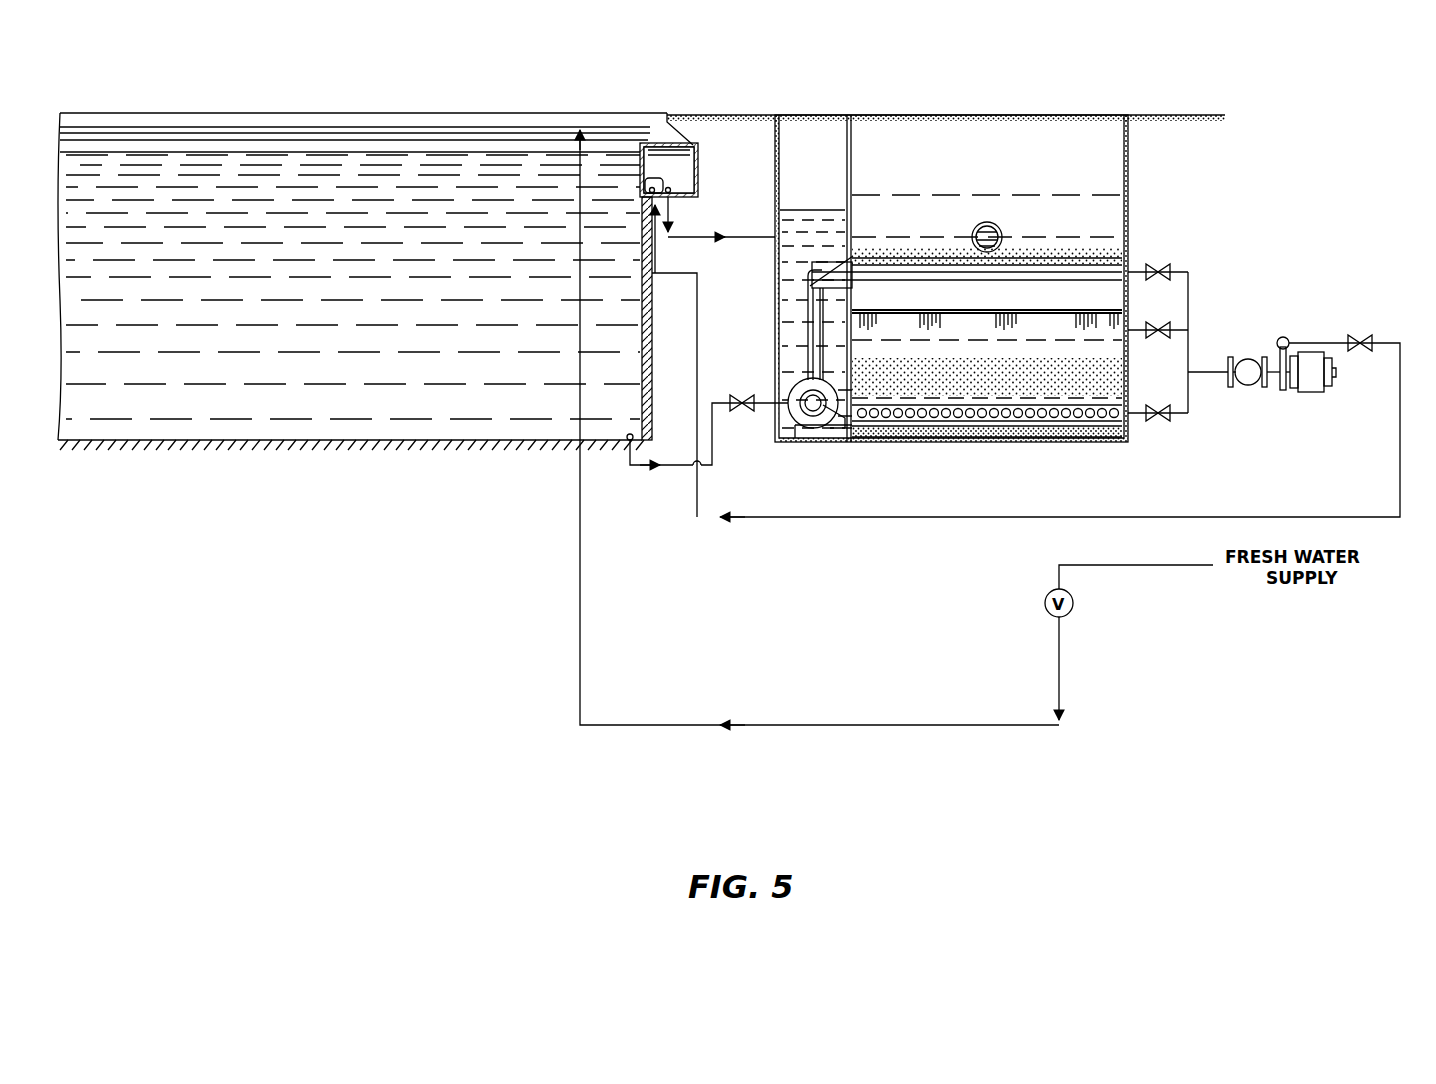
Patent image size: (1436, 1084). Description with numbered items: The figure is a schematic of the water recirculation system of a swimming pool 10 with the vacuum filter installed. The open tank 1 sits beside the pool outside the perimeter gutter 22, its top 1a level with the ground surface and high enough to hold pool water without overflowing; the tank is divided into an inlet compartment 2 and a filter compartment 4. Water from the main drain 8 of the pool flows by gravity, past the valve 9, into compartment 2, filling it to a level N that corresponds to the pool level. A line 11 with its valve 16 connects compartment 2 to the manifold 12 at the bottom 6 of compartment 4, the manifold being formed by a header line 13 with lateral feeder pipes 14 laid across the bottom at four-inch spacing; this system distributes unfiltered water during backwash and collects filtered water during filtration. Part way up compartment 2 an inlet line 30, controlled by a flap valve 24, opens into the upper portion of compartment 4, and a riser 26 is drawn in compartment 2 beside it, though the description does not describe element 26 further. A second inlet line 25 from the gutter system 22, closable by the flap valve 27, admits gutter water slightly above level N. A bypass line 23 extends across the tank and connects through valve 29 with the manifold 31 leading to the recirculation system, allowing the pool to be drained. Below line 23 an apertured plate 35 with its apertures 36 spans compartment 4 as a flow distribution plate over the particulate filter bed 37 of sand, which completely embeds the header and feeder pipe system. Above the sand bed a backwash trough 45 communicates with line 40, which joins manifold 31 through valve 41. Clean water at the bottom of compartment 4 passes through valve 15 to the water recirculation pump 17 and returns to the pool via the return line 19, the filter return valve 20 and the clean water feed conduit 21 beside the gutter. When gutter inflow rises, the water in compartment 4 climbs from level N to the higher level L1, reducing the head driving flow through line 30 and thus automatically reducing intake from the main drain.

The open tank 1 is at (1130, 178).
The top of the tank 1a is at (976, 115).
The compartment 2 is at (818, 164).
The compartment 4 is at (1004, 192).
The bottom 6 is at (893, 442).
The main drain 8 is at (630, 436).
The valve 9 is at (742, 395).
The swimming pool 10 is at (42, 150).
The line 11 is at (838, 424).
The manifold 12 is at (990, 430).
The header line 13 is at (1058, 404).
The lateral feeder pipes 14 is at (1036, 410).
The valve 15 is at (1164, 408).
The valve 16 is at (803, 422).
The water recirculation pump 17 is at (1277, 402).
The return line 19 is at (648, 345).
The filter return valve 20 is at (1360, 335).
The clean water feed conduit 21 is at (642, 188).
The perimeter gutter 22 is at (698, 168).
The bypass line 23 is at (1044, 272).
The flap valve 24 is at (830, 272).
The inlet line 25 is at (750, 237).
The riser pipe 26 is at (808, 334).
The valve 27 is at (977, 230).
The valve 29 is at (1162, 265).
The inlet line 30 is at (852, 268).
The manifold 31 is at (1190, 358).
The apertured plate 35 is at (1026, 312).
The apertures 36 is at (925, 312).
The particulate filter bed 37 is at (1092, 388).
The line 40 is at (1148, 328).
The valve 41 is at (1170, 325).
The backwash trough 45 is at (886, 335).
The water level N is at (262, 150).
The higher level L1 is at (1042, 195).